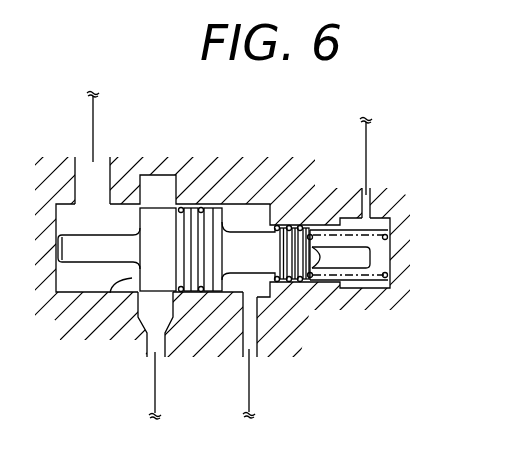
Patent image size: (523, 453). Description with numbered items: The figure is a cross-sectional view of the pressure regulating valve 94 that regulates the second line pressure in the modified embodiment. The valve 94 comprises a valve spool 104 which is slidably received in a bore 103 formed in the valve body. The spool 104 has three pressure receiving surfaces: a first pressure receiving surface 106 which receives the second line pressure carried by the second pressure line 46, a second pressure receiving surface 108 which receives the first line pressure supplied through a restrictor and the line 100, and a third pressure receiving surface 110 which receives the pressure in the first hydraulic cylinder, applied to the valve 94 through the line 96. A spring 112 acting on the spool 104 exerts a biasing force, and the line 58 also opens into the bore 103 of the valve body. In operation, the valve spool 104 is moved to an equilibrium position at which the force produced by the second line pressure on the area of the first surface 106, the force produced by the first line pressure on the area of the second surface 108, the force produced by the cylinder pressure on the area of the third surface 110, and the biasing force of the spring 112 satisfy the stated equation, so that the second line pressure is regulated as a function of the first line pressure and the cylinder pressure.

The second pressure line 46 is at (91, 121).
The outlet conduit 58 is at (155, 390).
The pressure regulating valve 94 is at (421, 215).
The line 96 is at (368, 144).
The line 100 is at (250, 393).
The bore 103 is at (85, 293).
The valve spool 104 is at (252, 216).
The first pressure receiving surface 106 is at (110, 293).
The second pressure receiving surface 108 is at (228, 208).
The third pressure receiving surface 110 is at (324, 270).
The spring 112 is at (386, 281).